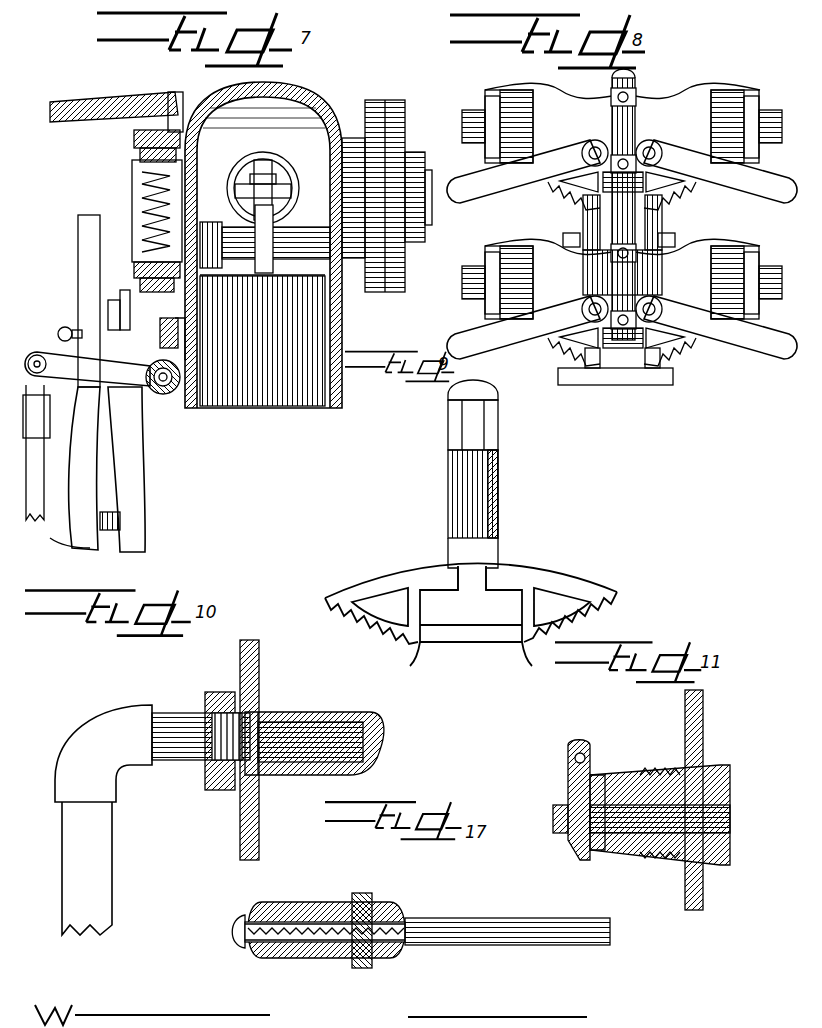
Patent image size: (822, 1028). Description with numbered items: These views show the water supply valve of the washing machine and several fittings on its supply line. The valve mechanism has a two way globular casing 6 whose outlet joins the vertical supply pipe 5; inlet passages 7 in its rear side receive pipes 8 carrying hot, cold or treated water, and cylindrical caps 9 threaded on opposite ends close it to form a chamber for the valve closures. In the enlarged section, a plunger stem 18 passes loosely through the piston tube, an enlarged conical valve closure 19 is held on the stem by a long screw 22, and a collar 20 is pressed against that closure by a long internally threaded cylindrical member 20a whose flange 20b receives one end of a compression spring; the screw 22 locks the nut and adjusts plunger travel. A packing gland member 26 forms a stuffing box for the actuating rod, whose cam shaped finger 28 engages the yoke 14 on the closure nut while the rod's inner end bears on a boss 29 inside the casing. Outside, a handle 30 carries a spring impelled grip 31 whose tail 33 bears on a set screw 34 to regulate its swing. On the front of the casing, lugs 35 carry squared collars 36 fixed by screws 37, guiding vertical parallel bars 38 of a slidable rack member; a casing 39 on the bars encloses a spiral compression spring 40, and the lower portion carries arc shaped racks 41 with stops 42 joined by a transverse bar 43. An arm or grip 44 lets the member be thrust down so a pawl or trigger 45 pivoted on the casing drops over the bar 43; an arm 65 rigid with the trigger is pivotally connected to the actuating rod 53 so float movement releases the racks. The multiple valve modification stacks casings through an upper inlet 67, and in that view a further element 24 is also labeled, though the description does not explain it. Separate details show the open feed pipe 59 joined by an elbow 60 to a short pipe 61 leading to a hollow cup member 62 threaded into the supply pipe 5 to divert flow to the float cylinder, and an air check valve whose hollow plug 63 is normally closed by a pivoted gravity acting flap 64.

In FIG. 10, the supply pipe 5 is at (260, 818).
In FIG. 11, the supply pipe 5 is at (705, 740).
In FIG. 7, the casing 6 is at (312, 102).
In FIG. 8, the casing 6 is at (700, 270).
In FIG. 7, the inlet passages 7 is at (352, 245).
In FIG. 7, the pipes 8 is at (418, 180).
In FIG. 8, the cylindrical caps 9 is at (462, 338).
In FIG. 7, the yoke 14 is at (272, 180).
In FIG. 17, the plunger stem 18 is at (503, 928).
In FIG. 17, the conical valve closure 19 is at (398, 920).
In FIG. 17, the collar 20 is at (362, 905).
In FIG. 17, the internally threaded cylindrical member 20a is at (290, 920).
In FIG. 17, the flange 20b is at (360, 968).
In FIG. 17, the screw 22 is at (250, 950).
In FIG. 8, the cover 24 is at (485, 92).
In FIG. 7, the packing gland member 26 is at (208, 222).
In FIG. 7, the cam shaped finger 28 is at (268, 270).
In FIG. 7, the boss 29 is at (295, 242).
In FIG. 7, the handle 30 is at (78, 440).
In FIG. 8, the handle 30 is at (748, 358).
In FIG. 7, the spring impelled grip 31 is at (135, 460).
In FIG. 7, the tail 33 is at (120, 310).
In FIG. 7, the set screw 34 is at (75, 330).
In FIG. 7, the lugs 35 is at (200, 290).
In FIG. 7, the squared collars 36 is at (140, 156).
In FIG. 7, the screws 37 is at (136, 272).
In FIG. 8, the vertical parallel bars 38 is at (615, 248).
In FIG. 9, the vertical parallel bars 38 is at (500, 440).
In FIG. 7, the casing 39 is at (132, 225).
In FIG. 8, the casing 39 is at (612, 285).
In FIG. 9, the casing 39 is at (500, 482).
In FIG. 7, the spiral compression spring 40 is at (142, 196).
In FIG. 8, the arc shaped racks 41 is at (686, 342).
In FIG. 9, the arc shaped racks 41 is at (390, 625).
In FIG. 9, the stops 42 is at (525, 660).
In FIG. 7, the transverse bar 43 is at (160, 365).
In FIG. 8, the transverse bar 43 is at (622, 368).
In FIG. 9, the transverse bar 43 is at (470, 648).
In FIG. 7, the arm or grip 44 is at (110, 100).
In FIG. 8, the arm or grip 44 is at (635, 80).
In FIG. 9, the arm or grip 44 is at (455, 395).
In FIG. 7, the pawl or trigger 45 is at (180, 338).
In FIG. 7, the actuating rod or bar 53 is at (70, 546).
In FIG. 10, the open feed pipe 59 is at (112, 878).
In FIG. 10, the elbow 60 is at (118, 765).
In FIG. 10, the short pipe 61 is at (175, 715).
In FIG. 10, the hollow plug or cup member 62 is at (295, 735).
In FIG. 11, the hollow plug member 63 is at (646, 855).
In FIG. 11, the gravity acting check or flap 64 is at (560, 785).
In FIG. 7, the arm 65 is at (60, 352).
In FIG. 8, the upper inlet 67 is at (563, 236).